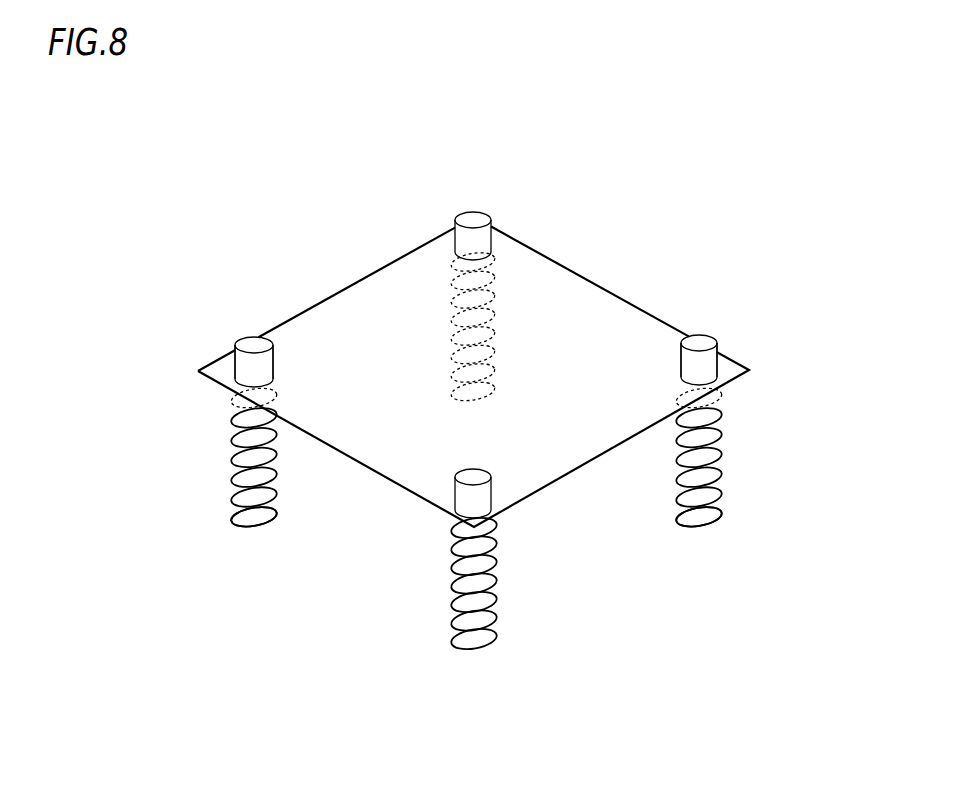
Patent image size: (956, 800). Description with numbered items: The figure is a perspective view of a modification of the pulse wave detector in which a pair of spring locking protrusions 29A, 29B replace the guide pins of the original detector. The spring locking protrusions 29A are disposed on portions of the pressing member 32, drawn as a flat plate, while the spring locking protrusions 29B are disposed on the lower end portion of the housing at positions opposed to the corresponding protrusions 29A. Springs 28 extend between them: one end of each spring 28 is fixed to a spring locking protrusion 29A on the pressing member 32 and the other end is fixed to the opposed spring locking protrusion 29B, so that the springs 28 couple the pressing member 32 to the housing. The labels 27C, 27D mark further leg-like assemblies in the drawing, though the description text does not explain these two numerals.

The pressing member 32 is at (628, 318).
The spring locking protrusion 29A is at (472, 225).
The spring locking protrusion 29B is at (466, 368).
The spring 28 is at (497, 287).
The leg 27C is at (247, 463).
The leg 27D is at (708, 443).